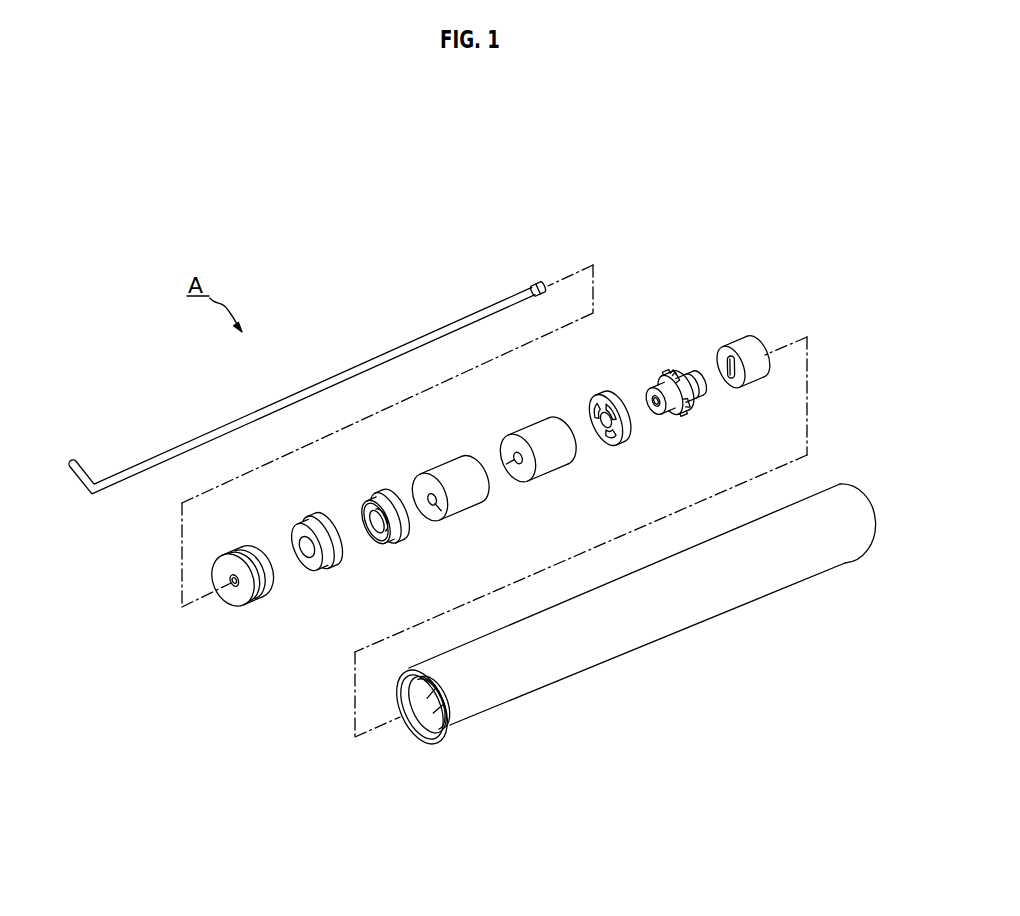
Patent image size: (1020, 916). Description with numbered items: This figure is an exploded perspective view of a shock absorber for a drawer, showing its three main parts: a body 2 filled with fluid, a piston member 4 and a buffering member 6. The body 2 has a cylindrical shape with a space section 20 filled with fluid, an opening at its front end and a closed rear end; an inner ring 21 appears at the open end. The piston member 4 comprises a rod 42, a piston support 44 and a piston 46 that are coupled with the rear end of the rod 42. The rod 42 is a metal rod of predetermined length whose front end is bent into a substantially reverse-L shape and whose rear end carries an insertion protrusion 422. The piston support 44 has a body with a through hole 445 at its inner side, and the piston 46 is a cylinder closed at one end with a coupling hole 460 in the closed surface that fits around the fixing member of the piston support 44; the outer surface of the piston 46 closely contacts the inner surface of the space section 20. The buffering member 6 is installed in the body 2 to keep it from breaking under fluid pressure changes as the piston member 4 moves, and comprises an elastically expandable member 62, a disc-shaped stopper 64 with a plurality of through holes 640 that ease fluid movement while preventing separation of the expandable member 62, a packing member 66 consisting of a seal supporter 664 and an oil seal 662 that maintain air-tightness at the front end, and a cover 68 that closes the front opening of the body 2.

The body 2 is at (615, 655).
The space section 20 is at (452, 736).
The inner ring of tube end 21 is at (419, 739).
The piston member 4 is at (757, 390).
The rod 42 is at (390, 353).
The insertion protrusion 422 is at (540, 283).
The piston support 44 is at (657, 372).
The through hole 445 is at (645, 386).
The piston 46 is at (733, 331).
The coupling hole 460 is at (713, 354).
The buffering member 6 is at (623, 446).
The expandable member 62 is at (507, 432).
The stopper 64 is at (578, 410).
The through holes 640 is at (591, 418).
The packing member 66 is at (370, 457).
The oil seal 662 is at (315, 520).
The seal supporter 664 is at (382, 491).
The cover 68 is at (237, 552).